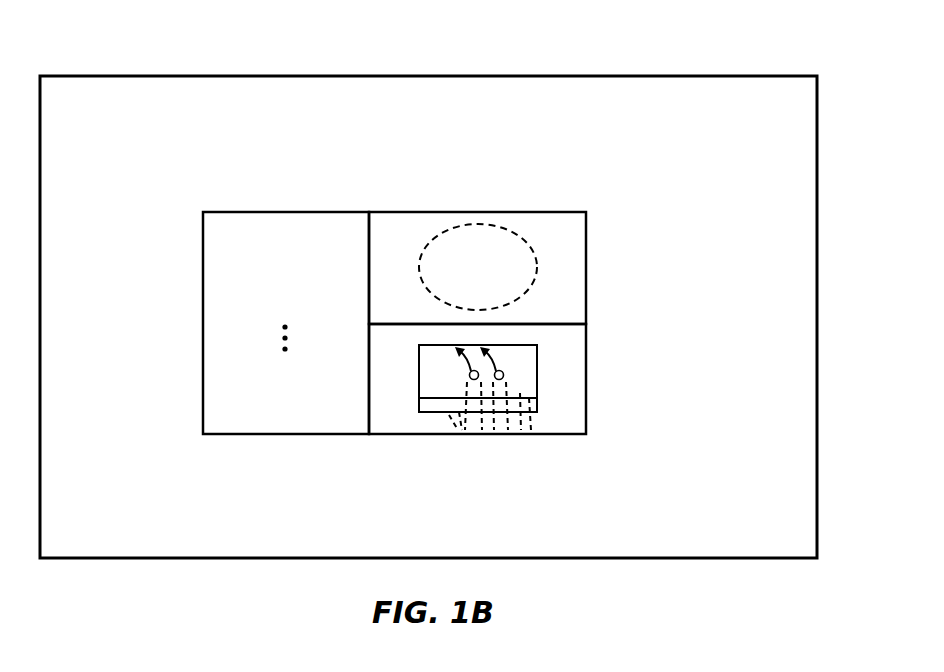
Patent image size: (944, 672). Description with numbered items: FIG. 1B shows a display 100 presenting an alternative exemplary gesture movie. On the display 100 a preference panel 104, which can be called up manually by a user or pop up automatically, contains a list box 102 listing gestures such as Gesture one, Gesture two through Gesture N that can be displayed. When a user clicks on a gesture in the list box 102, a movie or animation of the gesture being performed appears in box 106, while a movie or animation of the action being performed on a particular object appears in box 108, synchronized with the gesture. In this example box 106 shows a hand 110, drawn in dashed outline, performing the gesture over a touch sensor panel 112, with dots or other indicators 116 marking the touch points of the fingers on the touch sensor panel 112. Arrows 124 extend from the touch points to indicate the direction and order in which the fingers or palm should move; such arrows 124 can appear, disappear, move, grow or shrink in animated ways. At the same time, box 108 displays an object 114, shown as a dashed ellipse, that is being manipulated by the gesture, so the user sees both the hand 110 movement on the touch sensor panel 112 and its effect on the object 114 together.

The display 100 is at (636, 75).
The list box 102 is at (202, 323).
The preference panel 104 is at (524, 277).
The box 106 is at (524, 379).
The box 108 is at (588, 268).
The hand 110 is at (514, 428).
The touch sensor panel 112 is at (419, 378).
The object 114 is at (478, 267).
The indicators 116 is at (504, 375).
The arrows 124 is at (463, 365).